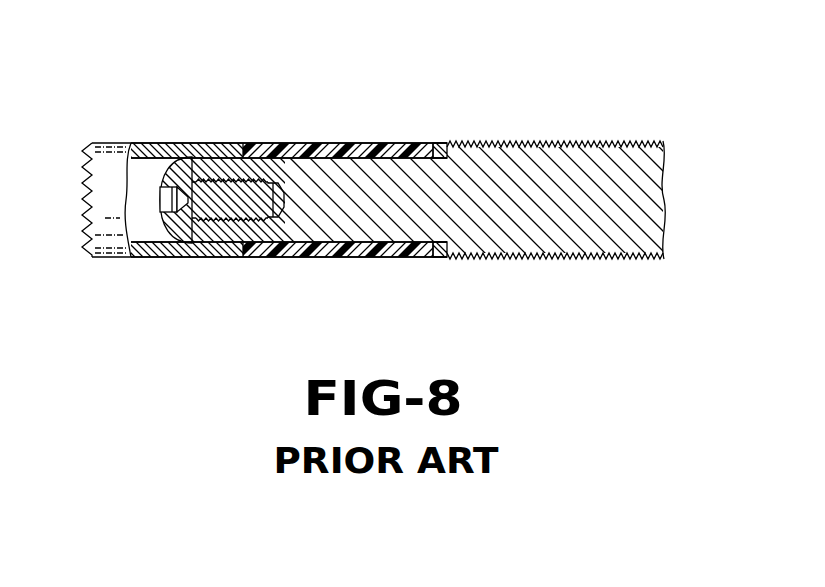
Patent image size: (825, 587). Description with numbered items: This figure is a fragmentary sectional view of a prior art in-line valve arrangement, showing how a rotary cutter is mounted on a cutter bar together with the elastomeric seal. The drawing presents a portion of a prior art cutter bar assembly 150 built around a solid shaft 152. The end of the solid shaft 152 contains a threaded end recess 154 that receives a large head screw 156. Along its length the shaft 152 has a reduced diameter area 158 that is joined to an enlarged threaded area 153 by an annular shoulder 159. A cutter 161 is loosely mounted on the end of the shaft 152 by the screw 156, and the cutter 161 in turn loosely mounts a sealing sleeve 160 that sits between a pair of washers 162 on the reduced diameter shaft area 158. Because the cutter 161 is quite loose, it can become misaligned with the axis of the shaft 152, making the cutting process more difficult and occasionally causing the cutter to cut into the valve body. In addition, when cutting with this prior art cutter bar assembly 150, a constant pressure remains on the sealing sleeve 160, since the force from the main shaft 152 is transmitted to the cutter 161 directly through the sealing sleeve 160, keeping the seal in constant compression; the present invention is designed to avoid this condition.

The cutter bar assembly 150 is at (404, 108).
The solid shaft 152 is at (590, 236).
The enlarged threaded area 153 is at (590, 141).
The threaded end recess 154 is at (222, 180).
The large head screw 156 is at (180, 232).
The reduced diameter area 158 is at (347, 250).
The annular shoulder 159 is at (445, 243).
The sealing sleeve 160 is at (352, 145).
The cutter 161 is at (110, 237).
The washers 162 is at (440, 143).